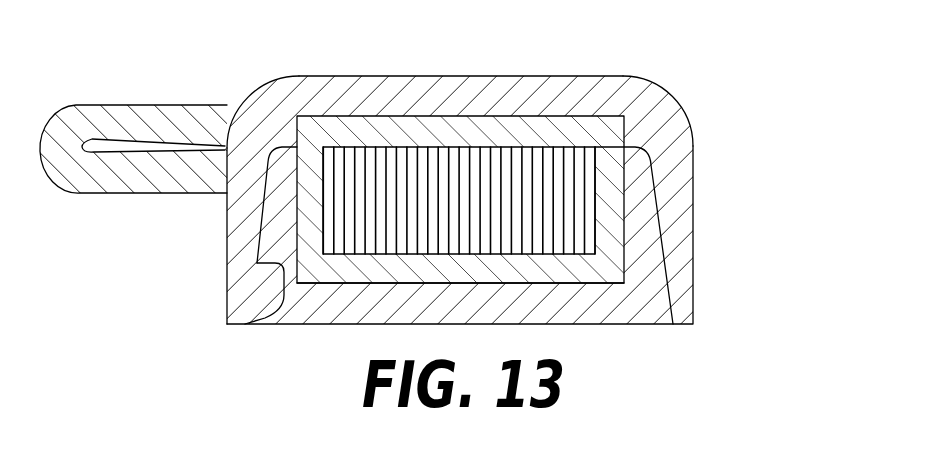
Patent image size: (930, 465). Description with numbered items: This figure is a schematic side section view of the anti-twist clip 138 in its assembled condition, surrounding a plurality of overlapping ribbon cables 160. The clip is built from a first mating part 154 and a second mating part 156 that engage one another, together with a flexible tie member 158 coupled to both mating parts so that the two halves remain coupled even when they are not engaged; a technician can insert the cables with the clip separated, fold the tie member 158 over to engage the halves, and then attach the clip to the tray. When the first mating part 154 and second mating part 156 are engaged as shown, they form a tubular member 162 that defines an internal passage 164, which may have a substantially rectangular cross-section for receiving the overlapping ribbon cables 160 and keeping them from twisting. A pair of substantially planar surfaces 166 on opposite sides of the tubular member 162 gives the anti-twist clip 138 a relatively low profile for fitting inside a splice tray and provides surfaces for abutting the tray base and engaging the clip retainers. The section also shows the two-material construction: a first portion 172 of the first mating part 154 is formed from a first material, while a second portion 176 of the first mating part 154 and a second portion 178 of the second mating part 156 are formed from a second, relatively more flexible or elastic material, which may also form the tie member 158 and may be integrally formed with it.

The anti-twist clip 138 is at (698, 63).
The first mating part 154 is at (637, 85).
The second mating part 156 is at (293, 315).
The flexible tie member 158 is at (98, 112).
The ribbon cables 160 is at (597, 210).
The tubular member 162 is at (356, 80).
The internal passage 164 is at (433, 150).
The substantially planar surfaces 166 is at (563, 76).
The first portion of the first mating part 172 is at (305, 85).
The second portion of the first mating part 176 is at (410, 125).
The second portion of the second mating part 178 is at (560, 270).